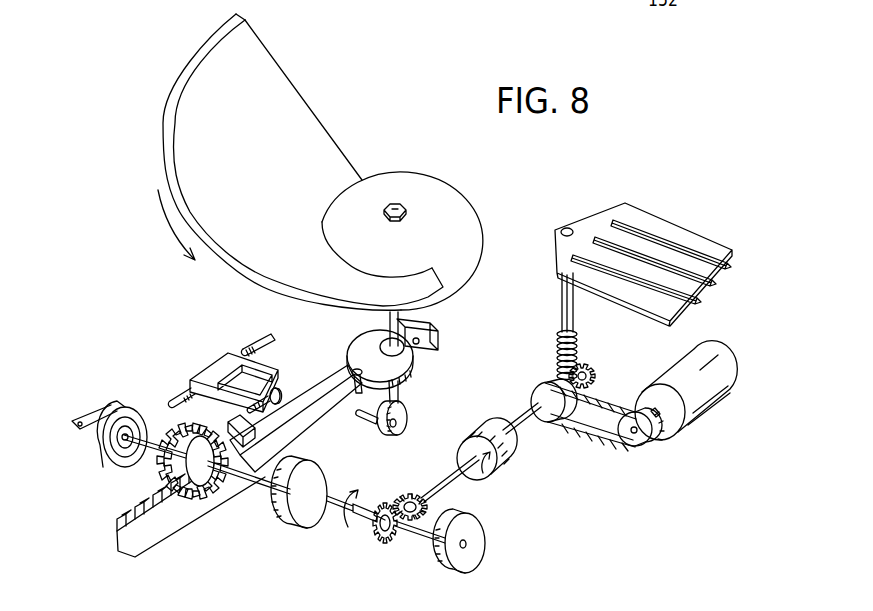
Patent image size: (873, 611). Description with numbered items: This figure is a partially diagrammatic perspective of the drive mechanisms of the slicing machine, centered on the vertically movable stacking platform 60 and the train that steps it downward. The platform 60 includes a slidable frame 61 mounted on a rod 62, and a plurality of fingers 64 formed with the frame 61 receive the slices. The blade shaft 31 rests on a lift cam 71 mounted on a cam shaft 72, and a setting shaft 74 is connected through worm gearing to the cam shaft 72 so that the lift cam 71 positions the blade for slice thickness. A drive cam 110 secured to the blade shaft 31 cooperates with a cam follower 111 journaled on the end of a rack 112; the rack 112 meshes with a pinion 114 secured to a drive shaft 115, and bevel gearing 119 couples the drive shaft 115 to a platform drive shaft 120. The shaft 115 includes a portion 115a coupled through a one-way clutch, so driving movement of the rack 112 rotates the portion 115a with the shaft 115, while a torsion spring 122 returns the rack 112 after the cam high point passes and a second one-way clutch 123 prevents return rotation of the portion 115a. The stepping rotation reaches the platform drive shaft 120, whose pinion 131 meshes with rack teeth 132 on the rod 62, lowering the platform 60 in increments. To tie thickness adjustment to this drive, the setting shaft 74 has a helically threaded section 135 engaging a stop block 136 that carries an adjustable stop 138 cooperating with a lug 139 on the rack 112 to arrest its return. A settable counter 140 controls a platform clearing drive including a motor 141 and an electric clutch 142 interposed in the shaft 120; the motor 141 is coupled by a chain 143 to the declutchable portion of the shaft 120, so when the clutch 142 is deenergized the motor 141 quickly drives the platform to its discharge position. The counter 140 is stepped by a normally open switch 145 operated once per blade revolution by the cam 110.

The settable counter 140 is at (440, 17).
The stacking platform 60 is at (652, 249).
The slidable frame 61 is at (602, 213).
The fingers 64 is at (673, 312).
The rod 62 is at (562, 300).
The rack teeth 132 is at (558, 345).
The pinion 131 is at (585, 360).
The chain 143 is at (610, 393).
The motor 141 is at (727, 363).
The electric clutch 142 is at (497, 430).
The platform drive shaft 120 is at (457, 480).
The second one-way clutch 123 is at (477, 547).
The bevel gearing 119 is at (405, 554).
The drive shaft 115 is at (257, 480).
The shaft portion 115a is at (333, 520).
The pinion 114 is at (160, 467).
The rack 112 is at (150, 540).
The torsion spring 122 is at (130, 398).
The stop block 136 is at (197, 370).
The helically threaded section 135 is at (247, 347).
The setting shaft 74 is at (257, 340).
The adjustable stop 138 is at (282, 390).
The lug 139 is at (227, 425).
The cam follower 111 is at (363, 383).
The drive cam 110 is at (407, 362).
The blade shaft 31 is at (402, 388).
The lift cam 71 is at (407, 427).
The cam shaft 72 is at (367, 417).
The normally open switch 145 is at (430, 330).